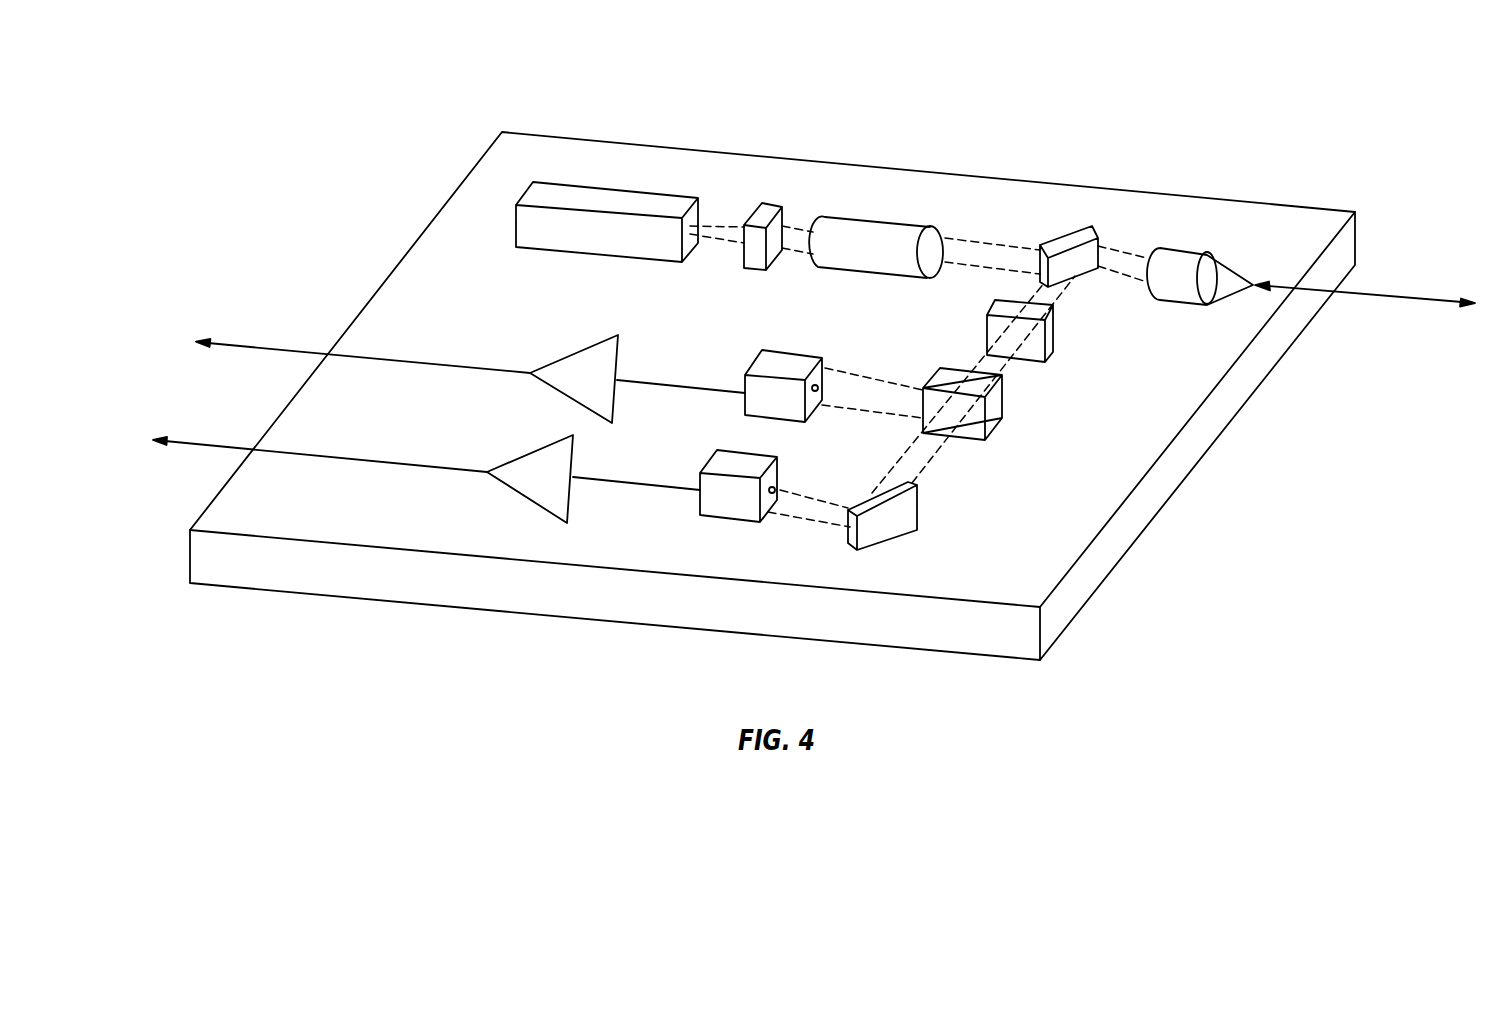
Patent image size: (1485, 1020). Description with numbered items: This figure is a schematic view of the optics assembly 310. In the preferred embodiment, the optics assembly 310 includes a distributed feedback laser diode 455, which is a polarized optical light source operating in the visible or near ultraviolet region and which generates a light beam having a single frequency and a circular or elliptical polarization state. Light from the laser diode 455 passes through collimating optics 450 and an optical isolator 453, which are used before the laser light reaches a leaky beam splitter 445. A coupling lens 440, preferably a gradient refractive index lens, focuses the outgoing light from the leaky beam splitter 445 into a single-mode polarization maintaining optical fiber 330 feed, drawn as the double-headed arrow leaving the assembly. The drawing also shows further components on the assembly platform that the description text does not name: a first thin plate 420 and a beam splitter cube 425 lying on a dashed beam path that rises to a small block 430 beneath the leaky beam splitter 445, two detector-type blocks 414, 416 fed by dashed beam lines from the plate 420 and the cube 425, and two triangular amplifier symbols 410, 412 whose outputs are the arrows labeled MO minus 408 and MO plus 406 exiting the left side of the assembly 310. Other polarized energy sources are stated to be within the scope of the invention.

The optics assembly 310 is at (498, 112).
The single-mode polarization maintaining optical fiber 330 is at (1373, 293).
The MO+ output signal 406 is at (247, 342).
The MO- output signal 408 is at (190, 442).
The amplifier 410 is at (527, 452).
The amplifier 412 is at (568, 355).
The photodetector 414 is at (710, 468).
The photodetector 416 is at (747, 370).
The mirror 420 is at (917, 510).
The polarizing beam splitter 425 is at (1002, 395).
The wave plate 430 is at (1053, 332).
The coupling lens 440 is at (1180, 248).
The leaky beam splitter 445 is at (1083, 227).
The collimating optics 450 is at (877, 220).
The optical isolator 453 is at (770, 203).
The distributed feedback laser diode 455 is at (617, 187).